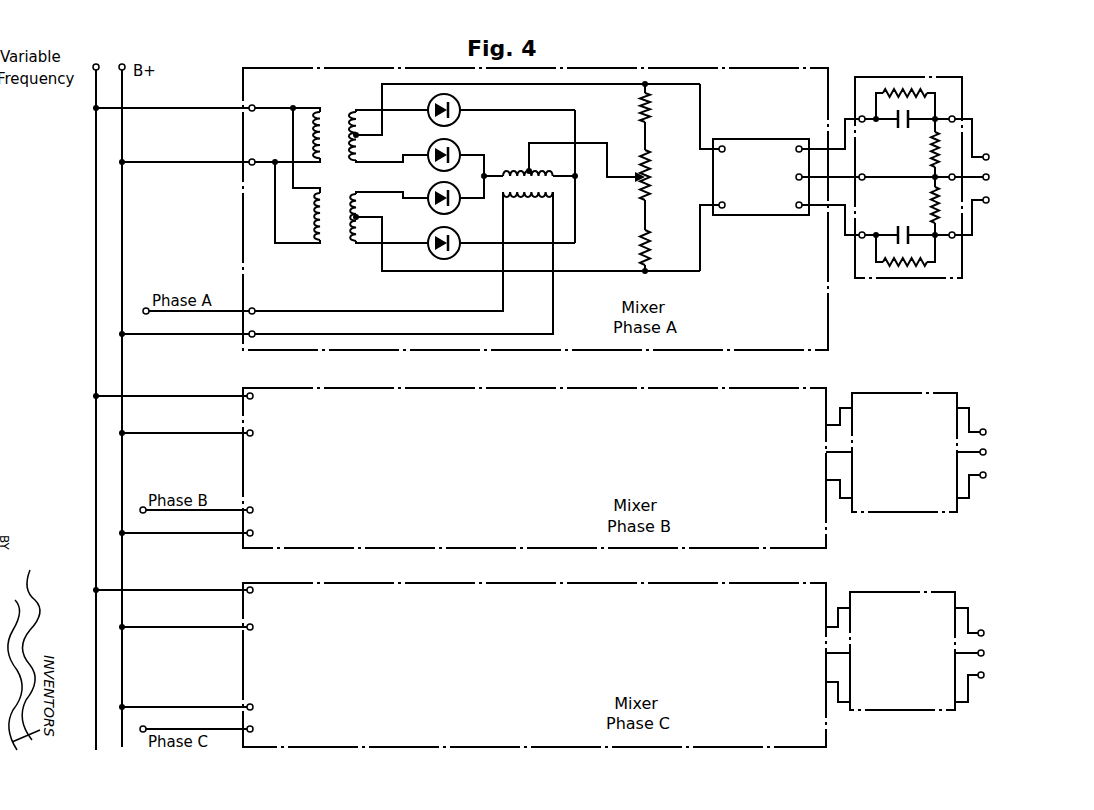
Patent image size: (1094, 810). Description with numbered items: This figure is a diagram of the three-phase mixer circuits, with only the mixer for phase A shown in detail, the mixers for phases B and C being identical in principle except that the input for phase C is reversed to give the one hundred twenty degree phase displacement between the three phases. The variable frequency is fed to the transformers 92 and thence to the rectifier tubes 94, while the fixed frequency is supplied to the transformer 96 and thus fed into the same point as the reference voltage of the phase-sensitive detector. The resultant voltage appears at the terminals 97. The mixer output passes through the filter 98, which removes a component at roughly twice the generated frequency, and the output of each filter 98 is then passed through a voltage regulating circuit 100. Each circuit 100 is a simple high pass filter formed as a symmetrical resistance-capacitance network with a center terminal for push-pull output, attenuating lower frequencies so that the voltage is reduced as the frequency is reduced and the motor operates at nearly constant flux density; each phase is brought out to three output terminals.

The transformers 92 is at (327, 242).
The rectifier tubes 94 is at (458, 115).
The transformer 96 is at (558, 184).
The terminals 97 is at (657, 98).
The filter 98 is at (742, 212).
The voltage regulating circuit 100 is at (957, 262).